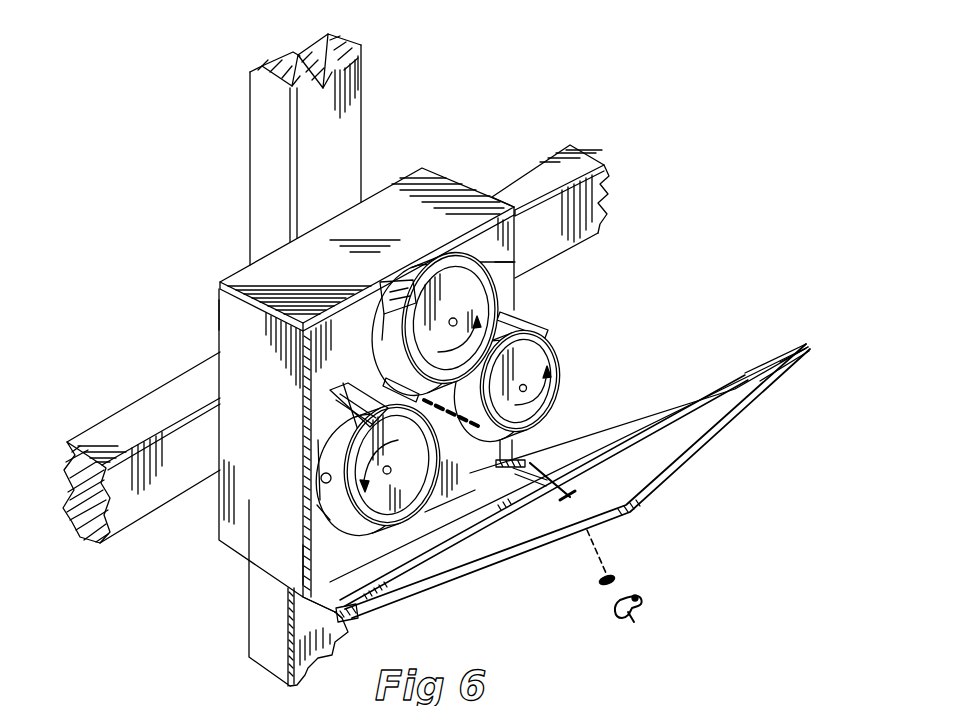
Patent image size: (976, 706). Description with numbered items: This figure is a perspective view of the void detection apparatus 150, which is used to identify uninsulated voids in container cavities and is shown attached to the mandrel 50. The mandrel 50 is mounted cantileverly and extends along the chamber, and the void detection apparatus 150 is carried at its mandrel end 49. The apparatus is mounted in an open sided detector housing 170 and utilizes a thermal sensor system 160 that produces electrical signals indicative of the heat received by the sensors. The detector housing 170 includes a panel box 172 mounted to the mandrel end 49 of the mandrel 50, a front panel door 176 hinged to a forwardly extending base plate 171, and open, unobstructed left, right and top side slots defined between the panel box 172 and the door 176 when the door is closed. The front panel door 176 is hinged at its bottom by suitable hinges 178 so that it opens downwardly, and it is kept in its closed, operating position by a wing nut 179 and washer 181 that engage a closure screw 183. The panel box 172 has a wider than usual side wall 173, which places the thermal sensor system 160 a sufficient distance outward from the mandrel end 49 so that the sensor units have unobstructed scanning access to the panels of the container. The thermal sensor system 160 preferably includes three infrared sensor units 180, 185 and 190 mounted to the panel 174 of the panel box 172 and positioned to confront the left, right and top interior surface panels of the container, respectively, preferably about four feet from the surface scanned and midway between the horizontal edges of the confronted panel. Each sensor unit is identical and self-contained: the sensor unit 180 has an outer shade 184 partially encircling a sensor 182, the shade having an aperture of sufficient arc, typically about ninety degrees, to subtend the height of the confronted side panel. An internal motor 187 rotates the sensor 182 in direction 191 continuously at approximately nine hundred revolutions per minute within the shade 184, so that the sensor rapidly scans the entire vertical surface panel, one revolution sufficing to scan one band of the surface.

The mandrel end 49 is at (250, 88).
The mandrel 50 is at (368, 66).
The void detection apparatus 150 is at (436, 135).
The thermal sensor system 160 is at (595, 320).
The detector housing 170 is at (290, 601).
The base plate 171 is at (348, 606).
The panel box 172 is at (222, 378).
The side wall 173 is at (238, 325).
The panel 174 is at (320, 556).
The front panel door 176 is at (753, 373).
The hinges 178 is at (550, 443).
The wing nut 179 is at (640, 603).
The infrared sensor unit 180 is at (300, 441).
The washer 181 is at (614, 575).
The sensor 182 is at (430, 266).
The closure screw 183 is at (440, 428).
The outer shade 184 is at (380, 310).
The infrared sensor unit 185 is at (547, 318).
The internal motor 187 is at (410, 280).
The infrared sensor unit 190 is at (505, 262).
The direction of rotation 191 is at (576, 380).